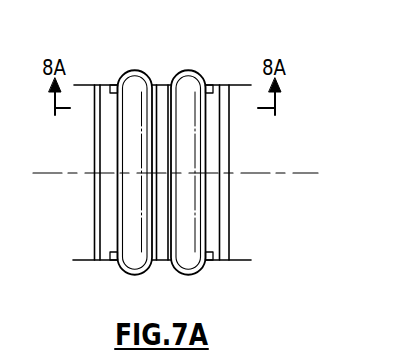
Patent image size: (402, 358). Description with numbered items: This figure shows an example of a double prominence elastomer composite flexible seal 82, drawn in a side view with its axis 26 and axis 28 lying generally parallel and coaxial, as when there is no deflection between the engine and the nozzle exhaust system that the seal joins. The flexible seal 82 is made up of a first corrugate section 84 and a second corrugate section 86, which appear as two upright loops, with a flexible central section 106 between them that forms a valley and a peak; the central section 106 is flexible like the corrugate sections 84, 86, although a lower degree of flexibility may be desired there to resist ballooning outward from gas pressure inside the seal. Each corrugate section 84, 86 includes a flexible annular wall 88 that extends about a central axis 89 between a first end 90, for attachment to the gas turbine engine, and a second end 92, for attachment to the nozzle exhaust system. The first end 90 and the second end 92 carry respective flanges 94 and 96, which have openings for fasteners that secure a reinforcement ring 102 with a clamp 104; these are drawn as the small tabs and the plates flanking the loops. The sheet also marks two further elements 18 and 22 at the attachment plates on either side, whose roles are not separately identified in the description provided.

The first plate 18 is at (87, 262).
The second plate 22 is at (240, 262).
The axis 26 is at (57, 174).
The axis 28 is at (278, 173).
The flexible seal 82 is at (266, 134).
The first corrugate section 84 is at (138, 70).
The second corrugate section 86 is at (181, 71).
The flexible annular wall 88 is at (183, 80).
The central axis 89 is at (127, 172).
The first end 90 is at (85, 66).
The second end 92 is at (236, 72).
The flange 94 is at (108, 84).
The flange 96 is at (211, 84).
The reinforcement ring 102 is at (111, 262).
The clamp 104 is at (225, 230).
The central section 106 is at (160, 250).